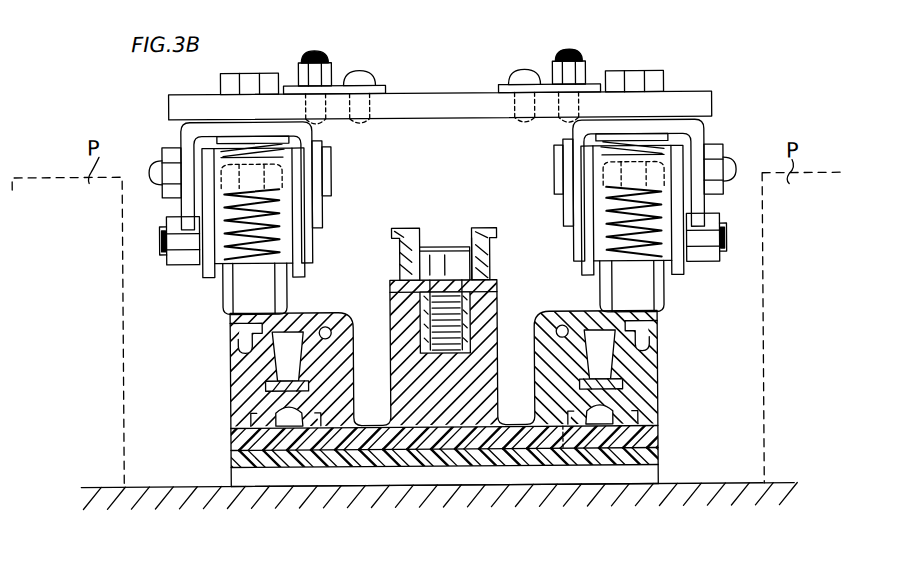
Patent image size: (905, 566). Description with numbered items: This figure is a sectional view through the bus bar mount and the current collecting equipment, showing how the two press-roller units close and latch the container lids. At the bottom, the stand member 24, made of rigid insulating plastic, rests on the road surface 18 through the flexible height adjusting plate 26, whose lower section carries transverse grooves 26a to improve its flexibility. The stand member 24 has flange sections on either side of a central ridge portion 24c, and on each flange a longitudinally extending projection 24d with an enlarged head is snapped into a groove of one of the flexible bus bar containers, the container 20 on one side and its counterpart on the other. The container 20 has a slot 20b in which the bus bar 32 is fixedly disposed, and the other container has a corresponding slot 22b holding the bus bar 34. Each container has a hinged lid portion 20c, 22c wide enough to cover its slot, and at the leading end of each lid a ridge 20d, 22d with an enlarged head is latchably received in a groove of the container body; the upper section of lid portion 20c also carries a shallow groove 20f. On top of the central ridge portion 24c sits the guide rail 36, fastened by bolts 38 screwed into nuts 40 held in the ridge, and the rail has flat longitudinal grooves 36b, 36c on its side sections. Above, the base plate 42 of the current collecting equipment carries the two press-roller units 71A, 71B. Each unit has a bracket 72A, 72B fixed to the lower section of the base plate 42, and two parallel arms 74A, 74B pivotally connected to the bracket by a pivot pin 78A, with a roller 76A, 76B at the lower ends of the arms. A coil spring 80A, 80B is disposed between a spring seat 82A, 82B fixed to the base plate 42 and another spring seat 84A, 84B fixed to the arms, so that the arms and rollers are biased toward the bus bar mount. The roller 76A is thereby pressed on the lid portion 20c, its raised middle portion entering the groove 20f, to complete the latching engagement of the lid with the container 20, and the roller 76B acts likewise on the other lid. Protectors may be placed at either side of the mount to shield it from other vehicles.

The road surface 18 is at (200, 486).
The bus bar container 20 is at (660, 392).
The slot 20b is at (635, 372).
The lid portion 20c is at (648, 343).
The ridge 20d is at (660, 380).
The shallow groove 20f is at (645, 325).
The slot 22b is at (287, 353).
The lid portion 22c is at (240, 331).
The ridge 22d is at (247, 348).
The stand member 24 is at (490, 388).
The central ridge portion 24c is at (487, 318).
The projection 24d is at (612, 445).
The height adjusting plate 26 is at (658, 463).
The groove 26a is at (546, 478).
The bus bar 32 is at (660, 415).
The bus bar 34 is at (267, 387).
The guide rail 36 is at (482, 228).
The flat groove 36b is at (486, 252).
The flat groove 36c is at (402, 260).
The bolt 38 is at (447, 252).
The nut 40 is at (475, 305).
The base plate 42 is at (466, 93).
The press-roller unit 71A is at (726, 209).
The press-roller unit 71B is at (148, 218).
The bracket 72A is at (712, 140).
The bracket 72B is at (187, 155).
The parallel arms 74A is at (583, 263).
The parallel arms 74B is at (210, 282).
The roller 76A is at (632, 273).
The roller 76B is at (257, 273).
The pivot pin 78A is at (572, 130).
The coil spring 80A is at (660, 147).
The coil spring 80B is at (218, 143).
The spring seat 82A is at (663, 137).
The spring seat 82B is at (226, 135).
The spring seat 84A is at (665, 305).
The spring seat 84B is at (228, 284).